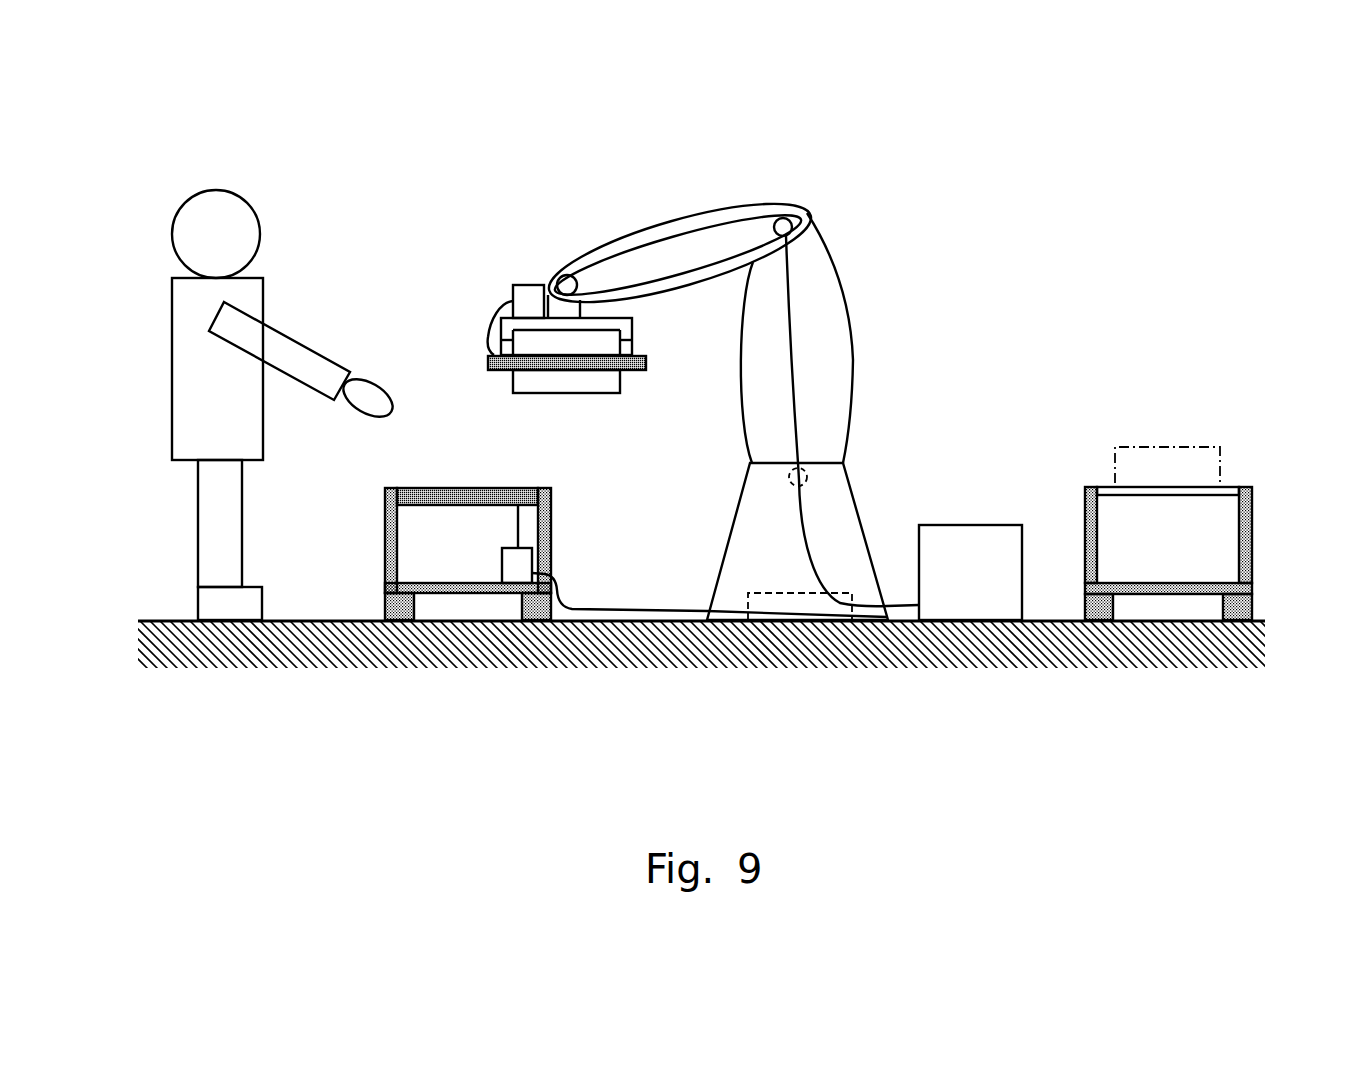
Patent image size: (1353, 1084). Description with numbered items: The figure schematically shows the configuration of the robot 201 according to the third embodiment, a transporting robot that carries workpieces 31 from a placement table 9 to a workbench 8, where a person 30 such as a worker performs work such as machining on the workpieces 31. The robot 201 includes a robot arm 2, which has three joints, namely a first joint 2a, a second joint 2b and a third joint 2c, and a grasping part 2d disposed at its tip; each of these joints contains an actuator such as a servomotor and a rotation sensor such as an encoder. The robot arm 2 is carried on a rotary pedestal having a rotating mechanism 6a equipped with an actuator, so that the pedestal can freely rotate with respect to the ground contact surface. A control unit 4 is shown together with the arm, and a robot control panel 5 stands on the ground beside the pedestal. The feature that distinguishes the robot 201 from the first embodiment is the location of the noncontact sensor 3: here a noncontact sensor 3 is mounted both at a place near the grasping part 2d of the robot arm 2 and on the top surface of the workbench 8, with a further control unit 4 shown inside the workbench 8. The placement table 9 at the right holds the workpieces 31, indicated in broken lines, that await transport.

The person 30 is at (217, 189).
The robot 201 is at (850, 184).
The robot arm 2 is at (697, 212).
The first joint 2a is at (563, 277).
The second joint 2b is at (780, 216).
The third joint 2c is at (808, 477).
The grasping part 2d is at (623, 323).
The control unit 4 is at (527, 285).
The noncontact sensor 3 is at (635, 372).
The workpiece 31 is at (528, 383).
The robot control panel 5 is at (947, 525).
The rotating mechanism 6a is at (840, 592).
The workbench 8 is at (383, 490).
The placement table 9 is at (1085, 498).